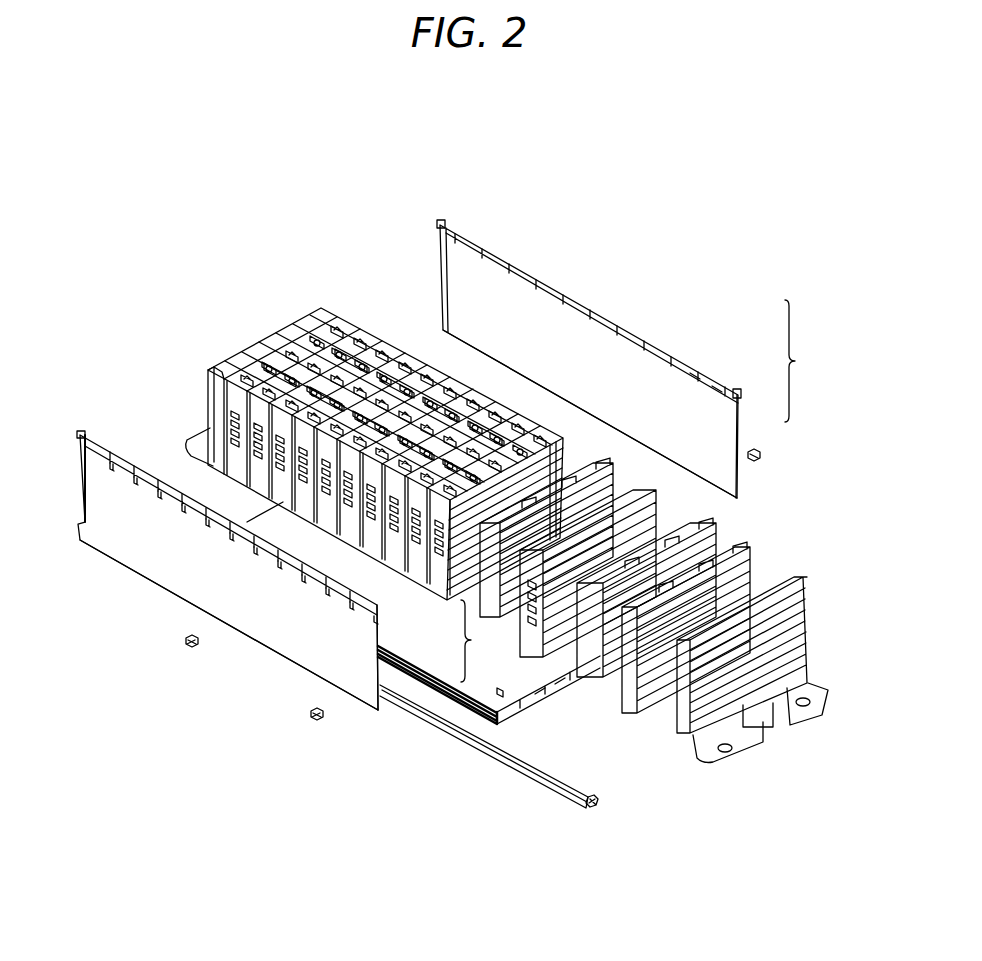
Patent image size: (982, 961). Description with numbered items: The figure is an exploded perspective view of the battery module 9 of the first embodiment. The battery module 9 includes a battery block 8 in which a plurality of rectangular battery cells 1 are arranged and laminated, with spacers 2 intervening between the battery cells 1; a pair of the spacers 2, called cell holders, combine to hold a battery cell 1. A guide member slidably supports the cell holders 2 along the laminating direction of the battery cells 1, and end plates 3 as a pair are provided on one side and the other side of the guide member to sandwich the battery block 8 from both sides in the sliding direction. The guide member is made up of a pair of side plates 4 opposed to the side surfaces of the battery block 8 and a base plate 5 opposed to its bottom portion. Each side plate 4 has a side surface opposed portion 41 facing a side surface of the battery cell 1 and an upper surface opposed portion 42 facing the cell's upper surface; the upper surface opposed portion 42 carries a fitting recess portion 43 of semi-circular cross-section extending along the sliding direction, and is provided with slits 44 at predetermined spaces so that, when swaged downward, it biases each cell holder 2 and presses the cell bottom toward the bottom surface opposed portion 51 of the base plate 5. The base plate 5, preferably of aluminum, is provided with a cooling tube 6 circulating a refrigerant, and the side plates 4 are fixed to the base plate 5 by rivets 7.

The battery cell 1 is at (601, 490).
The spacer 2 is at (560, 466).
The end plate 3 is at (282, 320).
The side plate 4 is at (444, 465).
The side surface opposed portion 41 is at (718, 420).
The upper surface opposed portion 42 is at (730, 398).
The fitting recess portion 43 is at (736, 401).
The slit 44 is at (690, 374).
The base plate 5 is at (547, 700).
The bottom surface opposed portion 51 is at (500, 692).
The cooling tube 6 is at (526, 778).
The rivet 7 is at (188, 644).
The battery block 8 is at (398, 308).
The battery module 9 is at (625, 279).